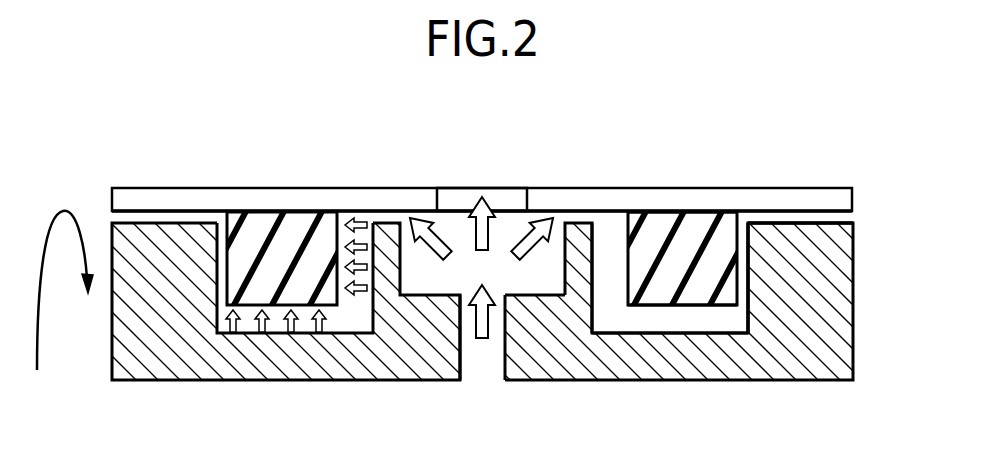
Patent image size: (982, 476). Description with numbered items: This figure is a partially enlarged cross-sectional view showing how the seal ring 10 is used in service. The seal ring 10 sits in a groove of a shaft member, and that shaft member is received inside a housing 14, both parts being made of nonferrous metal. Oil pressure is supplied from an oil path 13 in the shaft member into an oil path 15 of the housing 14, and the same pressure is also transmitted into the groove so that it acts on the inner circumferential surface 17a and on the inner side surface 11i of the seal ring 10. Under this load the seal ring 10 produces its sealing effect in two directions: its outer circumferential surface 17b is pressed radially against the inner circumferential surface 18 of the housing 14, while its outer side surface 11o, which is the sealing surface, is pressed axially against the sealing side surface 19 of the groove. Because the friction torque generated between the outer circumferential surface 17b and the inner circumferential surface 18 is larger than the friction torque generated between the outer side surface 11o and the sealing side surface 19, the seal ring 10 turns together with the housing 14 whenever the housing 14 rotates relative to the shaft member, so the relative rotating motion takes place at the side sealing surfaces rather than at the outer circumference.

The seal ring 10 is at (672, 275).
The inner side surface 11i is at (628, 242).
The outer side surface 11o is at (740, 222).
The oil path 13 is at (483, 358).
The housing 14 is at (188, 200).
The oil path 15 is at (507, 197).
The inner circumferential surface 17a is at (727, 305).
The outer circumferential surface 17b is at (698, 217).
The inner circumferential surface 18 is at (817, 215).
The sealing side surface 19 is at (750, 277).